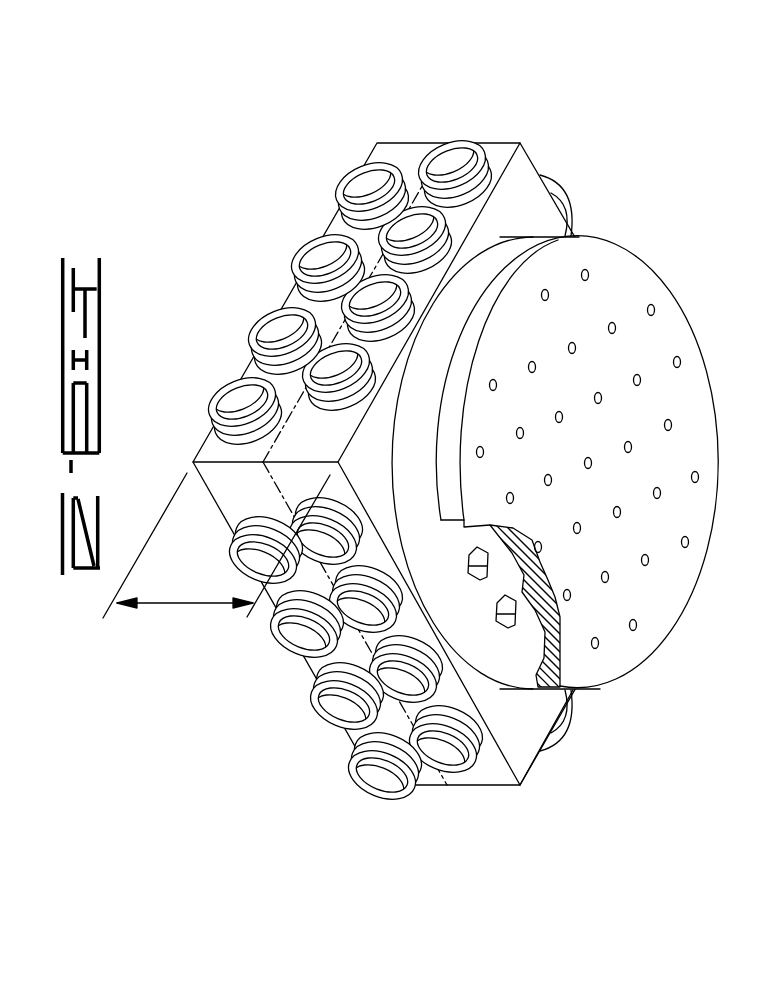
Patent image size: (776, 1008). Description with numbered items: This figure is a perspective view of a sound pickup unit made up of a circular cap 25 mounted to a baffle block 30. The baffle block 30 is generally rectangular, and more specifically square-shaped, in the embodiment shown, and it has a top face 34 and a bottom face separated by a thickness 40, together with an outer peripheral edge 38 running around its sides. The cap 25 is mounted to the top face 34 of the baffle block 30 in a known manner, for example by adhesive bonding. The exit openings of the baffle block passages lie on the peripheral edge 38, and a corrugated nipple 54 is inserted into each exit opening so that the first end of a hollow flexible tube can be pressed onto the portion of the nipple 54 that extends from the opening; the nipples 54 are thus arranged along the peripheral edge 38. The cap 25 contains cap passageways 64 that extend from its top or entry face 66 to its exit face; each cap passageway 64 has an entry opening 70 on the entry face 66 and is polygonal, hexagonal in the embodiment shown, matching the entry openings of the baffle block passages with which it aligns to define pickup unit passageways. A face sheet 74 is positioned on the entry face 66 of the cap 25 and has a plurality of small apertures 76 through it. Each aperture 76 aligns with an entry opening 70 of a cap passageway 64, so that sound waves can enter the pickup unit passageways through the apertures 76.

The circular cap 25 is at (495, 243).
The baffle block 30 is at (407, 143).
The top face 34 is at (540, 212).
The outer peripheral edge 38 is at (482, 768).
The thickness 40 is at (168, 604).
The corrugated nipple 54 is at (262, 316).
The cap passageway 64 is at (515, 617).
The top or entry face 66 is at (495, 667).
The entry opening 70 is at (515, 617).
The face sheet 74 is at (700, 583).
The apertures 76 is at (593, 273).